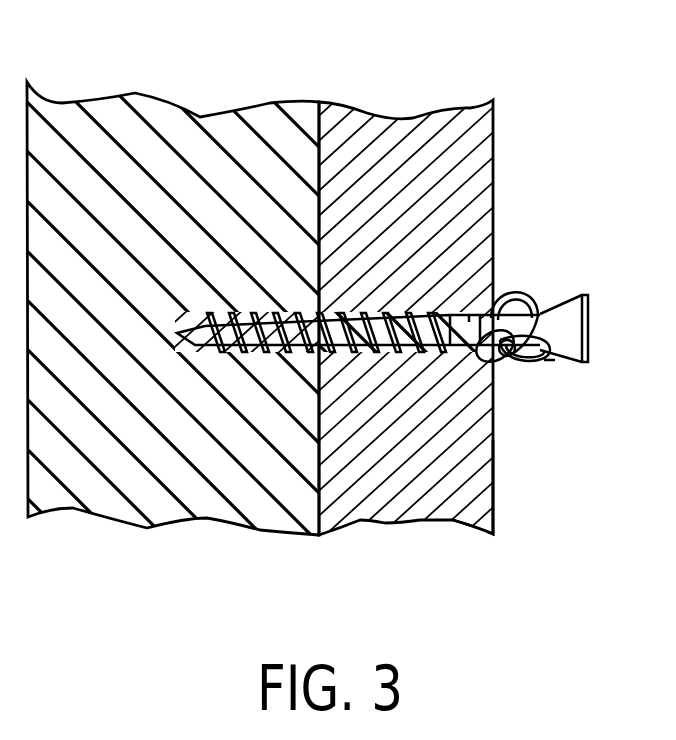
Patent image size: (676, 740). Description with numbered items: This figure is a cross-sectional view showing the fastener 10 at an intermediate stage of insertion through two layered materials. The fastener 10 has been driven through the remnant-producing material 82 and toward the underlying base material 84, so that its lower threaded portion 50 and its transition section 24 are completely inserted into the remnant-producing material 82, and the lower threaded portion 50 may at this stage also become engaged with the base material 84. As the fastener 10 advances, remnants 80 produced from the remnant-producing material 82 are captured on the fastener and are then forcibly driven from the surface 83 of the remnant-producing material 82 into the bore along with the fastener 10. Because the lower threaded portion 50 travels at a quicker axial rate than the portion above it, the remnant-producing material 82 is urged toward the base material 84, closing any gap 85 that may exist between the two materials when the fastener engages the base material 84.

The fastener 10 is at (587, 328).
The transition section 24 is at (497, 296).
The lower threaded portion 50 is at (380, 316).
The remnants 80 is at (537, 360).
The remnant-producing material 82 is at (350, 108).
The surface 83 is at (497, 497).
The base material 84 is at (110, 99).
The gap 85 is at (497, 360).